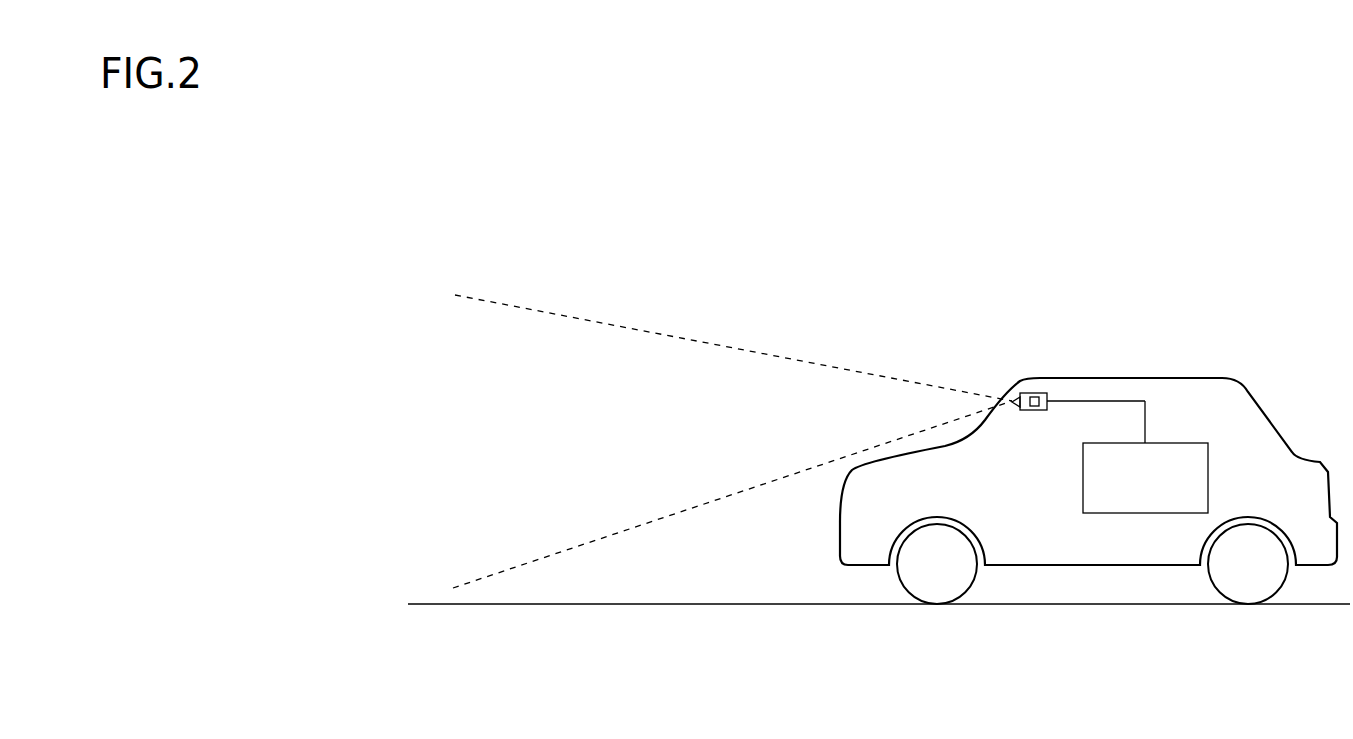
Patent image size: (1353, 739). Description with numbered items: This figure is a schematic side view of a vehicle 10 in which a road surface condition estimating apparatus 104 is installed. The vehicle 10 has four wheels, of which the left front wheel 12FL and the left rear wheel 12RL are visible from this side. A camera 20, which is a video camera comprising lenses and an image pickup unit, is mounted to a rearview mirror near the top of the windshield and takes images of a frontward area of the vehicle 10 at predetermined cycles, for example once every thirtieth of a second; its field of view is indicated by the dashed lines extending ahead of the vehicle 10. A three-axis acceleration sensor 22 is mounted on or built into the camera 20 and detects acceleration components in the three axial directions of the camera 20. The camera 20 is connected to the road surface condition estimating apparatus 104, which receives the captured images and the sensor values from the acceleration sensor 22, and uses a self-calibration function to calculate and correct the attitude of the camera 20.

The vehicle 10 is at (1193, 352).
The left front wheel 12FL is at (960, 577).
The left rear wheel 12RL is at (1272, 578).
The camera 20 is at (1040, 393).
The 3-axis acceleration sensor 22 is at (1037, 411).
The road surface condition estimating apparatus 104 is at (1177, 443).